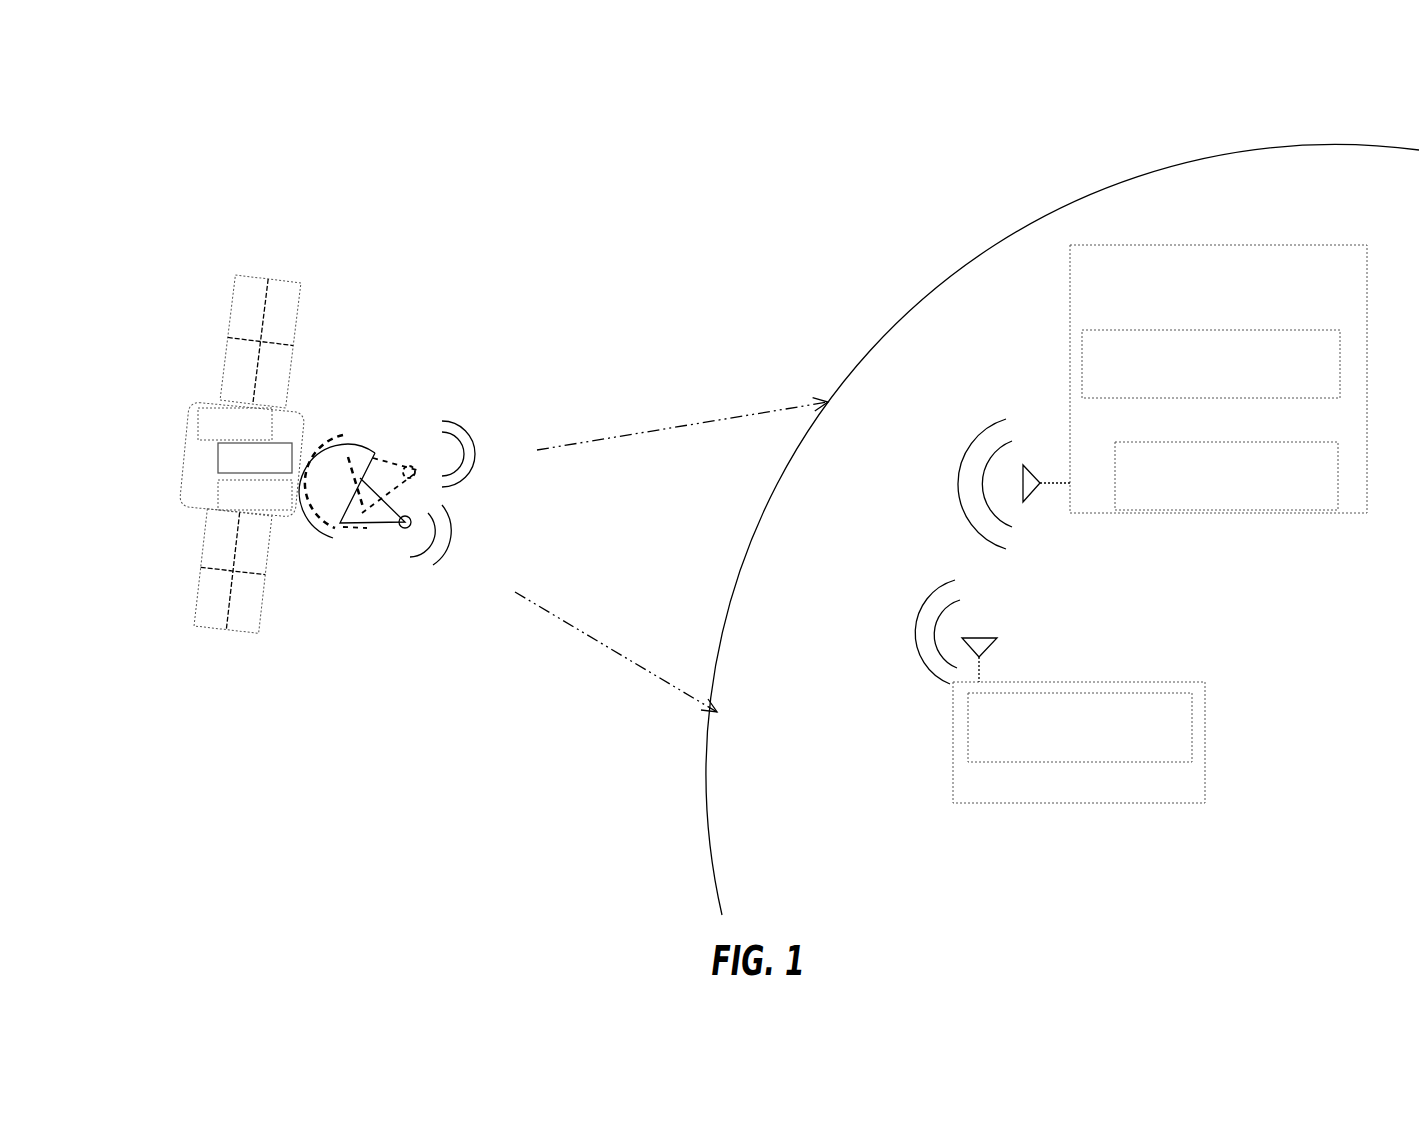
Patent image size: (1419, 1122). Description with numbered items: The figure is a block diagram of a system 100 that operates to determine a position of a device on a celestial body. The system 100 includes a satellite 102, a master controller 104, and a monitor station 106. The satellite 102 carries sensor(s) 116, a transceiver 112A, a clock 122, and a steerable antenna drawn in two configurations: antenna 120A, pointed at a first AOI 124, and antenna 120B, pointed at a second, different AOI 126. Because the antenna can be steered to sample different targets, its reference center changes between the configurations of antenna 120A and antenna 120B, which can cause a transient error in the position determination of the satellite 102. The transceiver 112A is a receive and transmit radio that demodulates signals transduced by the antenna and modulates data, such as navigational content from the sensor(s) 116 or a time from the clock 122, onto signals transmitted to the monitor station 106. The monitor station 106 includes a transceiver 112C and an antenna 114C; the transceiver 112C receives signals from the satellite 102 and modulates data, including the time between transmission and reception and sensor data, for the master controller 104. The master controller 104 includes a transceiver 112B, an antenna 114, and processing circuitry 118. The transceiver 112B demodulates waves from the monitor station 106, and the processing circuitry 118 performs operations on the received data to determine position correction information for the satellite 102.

The system 100 is at (252, 148).
The satellite 102 is at (283, 280).
The master controller 104 is at (1107, 245).
The monitor station 106 is at (1205, 787).
The transceiver 112A is at (218, 495).
The transceiver 112B is at (1120, 443).
The transceiver 112C is at (968, 723).
The antenna 114 is at (1025, 493).
The antenna 114C is at (1167, 695).
The sensor(s) 116 is at (285, 440).
The processing circuitry 118 is at (1095, 337).
The antenna in first configuration 120A is at (402, 455).
The antenna in second configuration 120B is at (398, 518).
The clock 122 is at (210, 407).
The first AOI 124 is at (828, 400).
The second AOI 126 is at (713, 715).